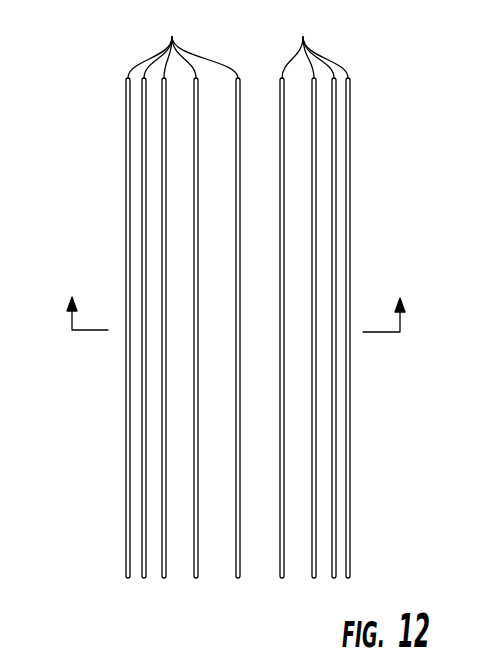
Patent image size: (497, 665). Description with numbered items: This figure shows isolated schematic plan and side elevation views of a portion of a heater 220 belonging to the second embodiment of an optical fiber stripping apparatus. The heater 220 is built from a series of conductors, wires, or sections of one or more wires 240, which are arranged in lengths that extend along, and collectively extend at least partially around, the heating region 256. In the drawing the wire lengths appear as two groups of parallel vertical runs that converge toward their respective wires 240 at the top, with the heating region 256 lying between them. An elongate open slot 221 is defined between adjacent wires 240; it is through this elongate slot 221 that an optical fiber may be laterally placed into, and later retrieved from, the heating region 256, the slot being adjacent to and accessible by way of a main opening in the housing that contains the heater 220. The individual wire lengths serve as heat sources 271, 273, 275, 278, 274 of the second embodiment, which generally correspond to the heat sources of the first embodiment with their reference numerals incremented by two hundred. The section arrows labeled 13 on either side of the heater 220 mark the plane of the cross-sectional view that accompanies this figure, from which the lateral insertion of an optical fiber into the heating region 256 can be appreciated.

The heater 220 is at (90, 128).
The wires 240 is at (238, 44).
The elongate open slot 221 is at (213, 560).
The heating region 256 is at (259, 560).
The heat source 271 is at (242, 249).
The heat source 273 is at (125, 330).
The heat source 275 is at (161, 312).
The heat source 278 is at (316, 300).
The heat source 274 is at (351, 352).
The section line 13- 13 is at (234, 300).